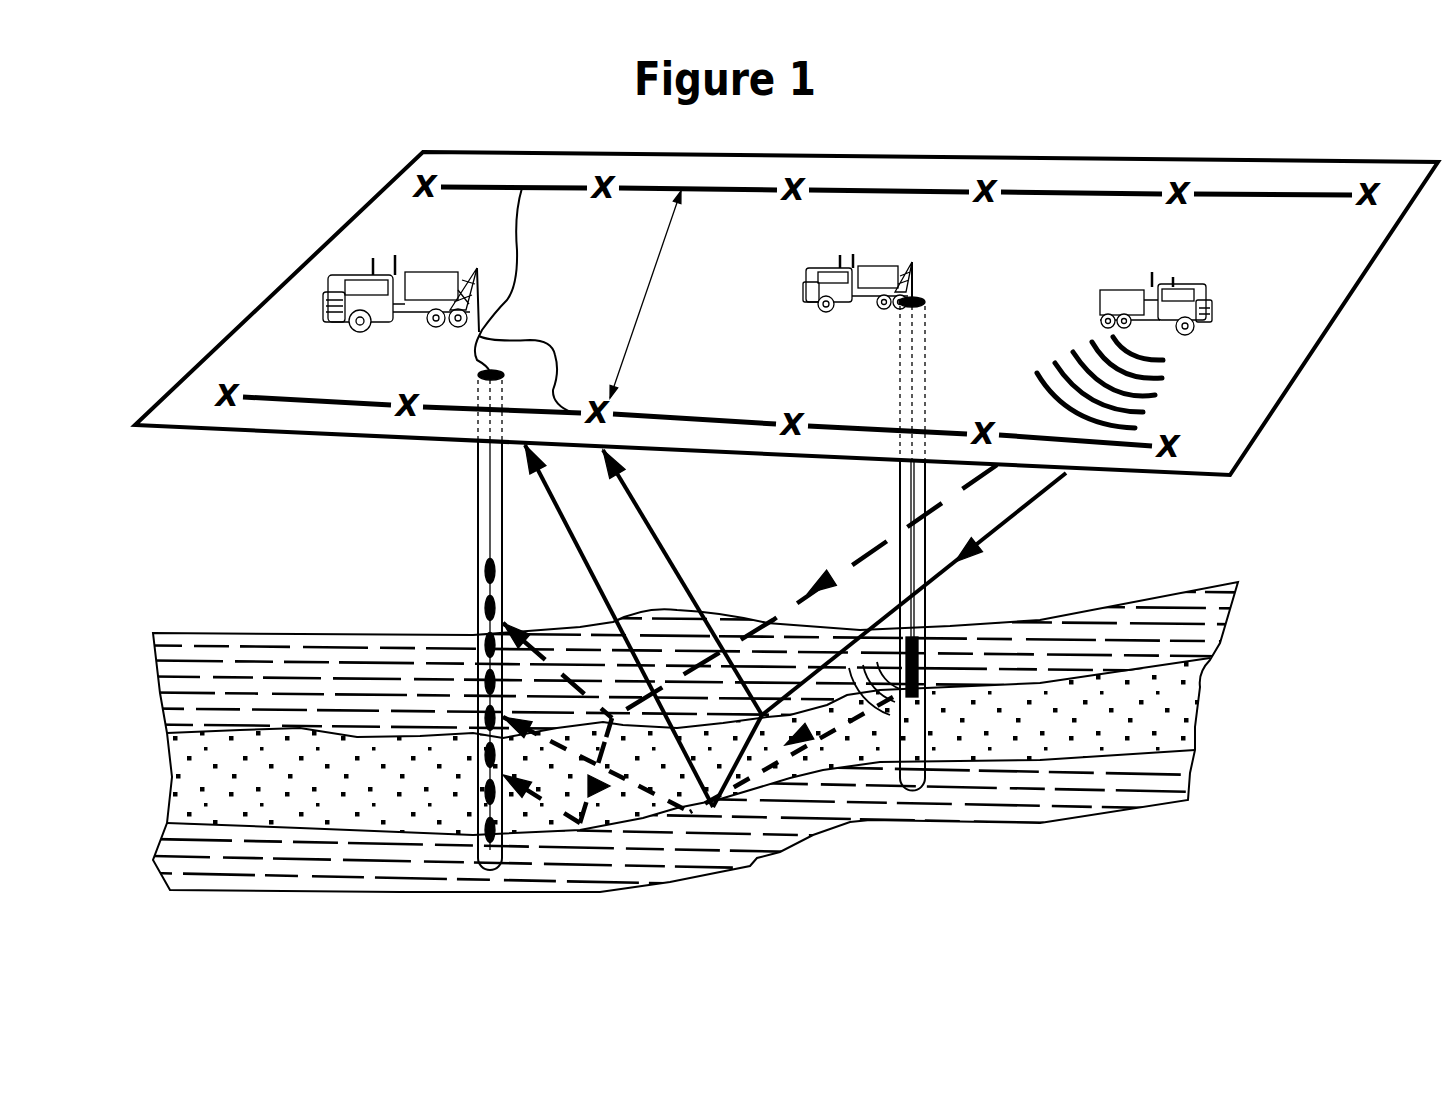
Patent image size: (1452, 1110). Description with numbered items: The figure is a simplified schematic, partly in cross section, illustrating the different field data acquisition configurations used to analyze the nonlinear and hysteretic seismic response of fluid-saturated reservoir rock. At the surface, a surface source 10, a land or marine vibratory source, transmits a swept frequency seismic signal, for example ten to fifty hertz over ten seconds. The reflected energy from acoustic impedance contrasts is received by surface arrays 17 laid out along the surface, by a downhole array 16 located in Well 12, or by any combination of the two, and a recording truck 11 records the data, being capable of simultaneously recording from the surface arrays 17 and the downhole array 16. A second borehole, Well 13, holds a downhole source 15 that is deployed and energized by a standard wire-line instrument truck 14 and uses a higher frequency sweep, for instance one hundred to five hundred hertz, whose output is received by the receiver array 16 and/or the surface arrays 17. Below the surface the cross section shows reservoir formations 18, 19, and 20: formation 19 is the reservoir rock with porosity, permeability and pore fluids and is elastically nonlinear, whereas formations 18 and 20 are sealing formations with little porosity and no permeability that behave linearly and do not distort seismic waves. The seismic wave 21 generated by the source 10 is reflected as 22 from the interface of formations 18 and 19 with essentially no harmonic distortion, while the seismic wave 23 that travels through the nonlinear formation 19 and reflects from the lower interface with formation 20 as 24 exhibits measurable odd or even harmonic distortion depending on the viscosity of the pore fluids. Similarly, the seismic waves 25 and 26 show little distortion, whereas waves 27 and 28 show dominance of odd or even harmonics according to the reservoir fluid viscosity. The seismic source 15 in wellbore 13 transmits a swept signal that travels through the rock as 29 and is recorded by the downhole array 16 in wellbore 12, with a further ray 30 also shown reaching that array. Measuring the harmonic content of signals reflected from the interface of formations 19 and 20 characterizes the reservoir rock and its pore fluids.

The surface source 10 is at (1126, 335).
The recording truck 11 is at (400, 277).
The Well 12 is at (465, 375).
The Well 13 is at (935, 310).
The wire-line instrument truck 14 is at (857, 261).
The downhole source 15 is at (913, 548).
The downhole array 16 is at (453, 625).
The surface arrays 17 is at (645, 294).
The formation 18 is at (695, 737).
The reservoir formation 19 is at (688, 746).
The formation 20 is at (695, 822).
The seismic wave 21 is at (914, 594).
The reflected seismic wave 22 is at (682, 582).
The seismic wave 23 is at (729, 759).
The reflected signal 24 is at (619, 626).
The seismic wave 25 is at (804, 591).
The seismic wave 26 is at (557, 670).
The seismic wave 27 is at (608, 774).
The seismic wave 28 is at (541, 813).
The seismic swept frequency signal 29 is at (791, 754).
The ray reflected from lower interface to receivers 30 is at (596, 764).